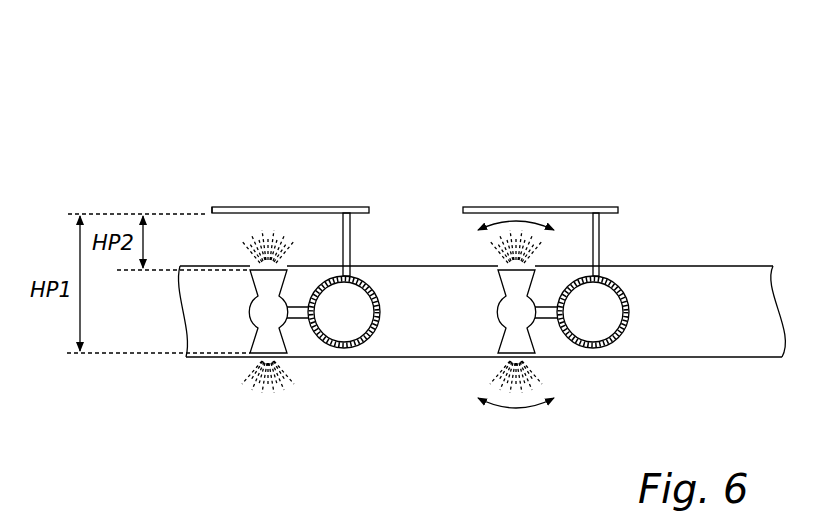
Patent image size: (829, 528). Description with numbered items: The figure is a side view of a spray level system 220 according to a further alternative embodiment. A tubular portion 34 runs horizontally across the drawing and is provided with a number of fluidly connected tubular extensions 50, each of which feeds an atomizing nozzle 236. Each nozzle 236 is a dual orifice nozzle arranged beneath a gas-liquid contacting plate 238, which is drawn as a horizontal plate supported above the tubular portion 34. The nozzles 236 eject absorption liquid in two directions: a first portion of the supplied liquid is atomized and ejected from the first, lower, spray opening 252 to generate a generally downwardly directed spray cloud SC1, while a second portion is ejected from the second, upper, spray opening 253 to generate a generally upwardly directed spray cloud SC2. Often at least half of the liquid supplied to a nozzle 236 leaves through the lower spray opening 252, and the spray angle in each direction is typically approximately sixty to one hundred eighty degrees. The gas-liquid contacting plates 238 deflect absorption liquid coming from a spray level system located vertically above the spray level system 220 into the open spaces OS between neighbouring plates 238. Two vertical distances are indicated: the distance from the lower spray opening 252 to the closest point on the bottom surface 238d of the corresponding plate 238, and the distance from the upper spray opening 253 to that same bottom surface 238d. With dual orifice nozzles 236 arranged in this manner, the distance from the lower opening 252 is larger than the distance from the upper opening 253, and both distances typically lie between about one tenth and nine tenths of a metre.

The spray level system 220 is at (472, 85).
The tubular portion 34 is at (745, 266).
The gas-liquid contacting plate 238 is at (308, 208).
The bottom surface 238d is at (224, 212).
The tubular extension 50 is at (338, 348).
The atomizing nozzle 236 is at (250, 307).
The second, upper, spray opening 253 is at (252, 268).
The first, lower, spray opening 252 is at (262, 357).
The spray cloud SC1 is at (276, 375).
The spray cloud SC2 is at (253, 240).
The open space OS is at (417, 224).